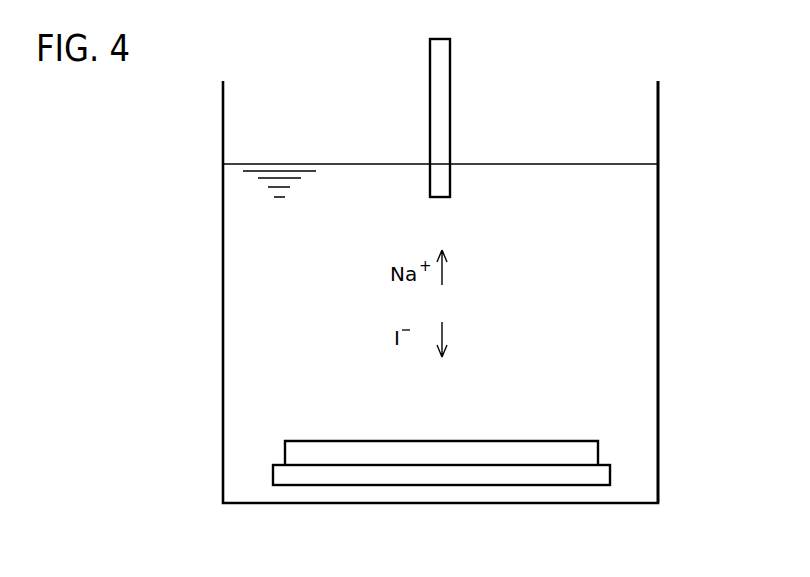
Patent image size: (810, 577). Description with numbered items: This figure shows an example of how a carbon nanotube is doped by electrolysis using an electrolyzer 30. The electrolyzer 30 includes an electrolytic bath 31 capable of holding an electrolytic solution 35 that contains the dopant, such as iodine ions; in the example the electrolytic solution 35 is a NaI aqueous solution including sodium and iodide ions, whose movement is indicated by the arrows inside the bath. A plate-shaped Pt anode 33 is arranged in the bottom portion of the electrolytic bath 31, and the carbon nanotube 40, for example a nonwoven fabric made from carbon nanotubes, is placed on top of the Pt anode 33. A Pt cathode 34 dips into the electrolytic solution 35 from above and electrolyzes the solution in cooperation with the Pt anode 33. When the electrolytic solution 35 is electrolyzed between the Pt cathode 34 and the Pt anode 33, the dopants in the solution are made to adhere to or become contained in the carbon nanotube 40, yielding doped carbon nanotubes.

The electrolyzer 30 is at (680, 140).
The electrolytic bath 31 is at (658, 231).
The Pt anode 33 is at (528, 480).
The Pt cathode 34 is at (442, 74).
The electrolytic solution 35 is at (235, 297).
The carbon nanotube 40 is at (560, 450).